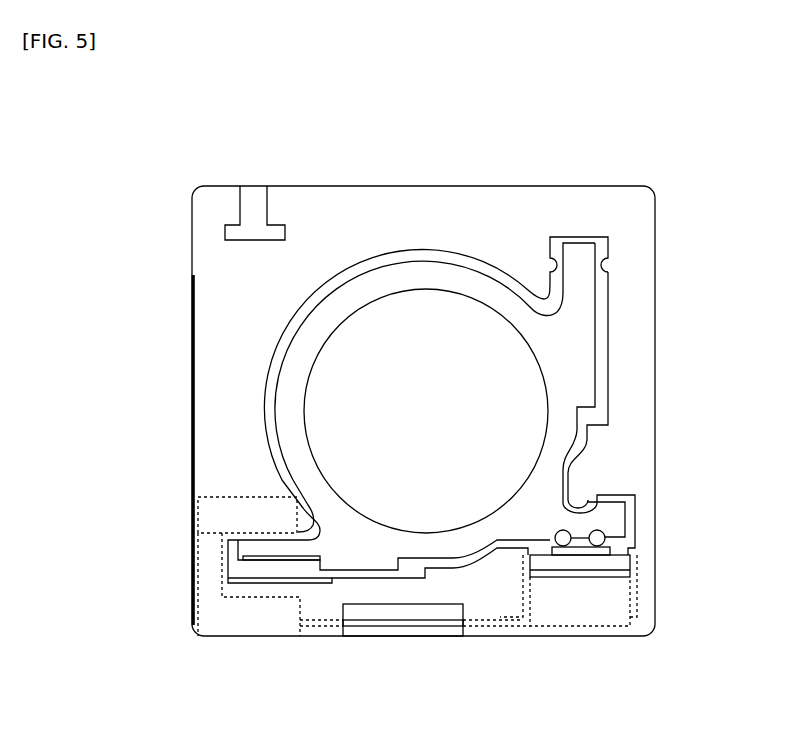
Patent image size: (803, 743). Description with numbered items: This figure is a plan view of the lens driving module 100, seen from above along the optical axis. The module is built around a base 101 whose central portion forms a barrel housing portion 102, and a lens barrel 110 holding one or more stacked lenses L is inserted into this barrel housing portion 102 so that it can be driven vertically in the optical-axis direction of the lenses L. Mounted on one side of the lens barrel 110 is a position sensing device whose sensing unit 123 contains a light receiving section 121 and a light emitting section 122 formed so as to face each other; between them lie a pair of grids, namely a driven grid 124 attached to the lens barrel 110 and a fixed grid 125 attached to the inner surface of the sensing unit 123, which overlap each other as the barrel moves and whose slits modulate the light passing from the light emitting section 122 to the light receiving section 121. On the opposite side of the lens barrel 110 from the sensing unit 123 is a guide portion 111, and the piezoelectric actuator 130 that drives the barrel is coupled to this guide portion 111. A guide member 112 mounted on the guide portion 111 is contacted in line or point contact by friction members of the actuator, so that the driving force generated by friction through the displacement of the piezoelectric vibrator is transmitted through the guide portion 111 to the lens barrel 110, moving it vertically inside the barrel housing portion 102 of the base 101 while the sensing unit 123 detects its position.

The lens driving module 100 is at (638, 143).
The base 101 is at (332, 213).
The barrel housing portion 102 is at (420, 256).
The lenses L is at (312, 407).
The lens barrel 110 is at (583, 355).
The guide portion 111 is at (615, 523).
The guide member 112 is at (600, 540).
The light receiving section 121 is at (255, 520).
The light emitting section 122 is at (250, 625).
The sensing unit 123 is at (105, 508).
The driven grid 124 is at (258, 562).
The fixed grid 125 is at (318, 584).
The piezoelectric actuator 130 is at (588, 637).